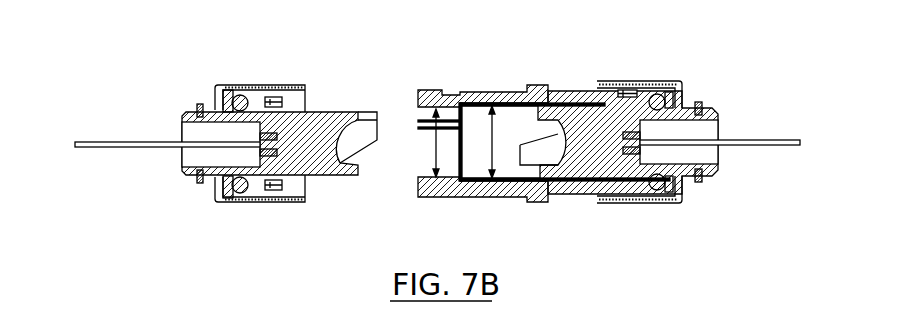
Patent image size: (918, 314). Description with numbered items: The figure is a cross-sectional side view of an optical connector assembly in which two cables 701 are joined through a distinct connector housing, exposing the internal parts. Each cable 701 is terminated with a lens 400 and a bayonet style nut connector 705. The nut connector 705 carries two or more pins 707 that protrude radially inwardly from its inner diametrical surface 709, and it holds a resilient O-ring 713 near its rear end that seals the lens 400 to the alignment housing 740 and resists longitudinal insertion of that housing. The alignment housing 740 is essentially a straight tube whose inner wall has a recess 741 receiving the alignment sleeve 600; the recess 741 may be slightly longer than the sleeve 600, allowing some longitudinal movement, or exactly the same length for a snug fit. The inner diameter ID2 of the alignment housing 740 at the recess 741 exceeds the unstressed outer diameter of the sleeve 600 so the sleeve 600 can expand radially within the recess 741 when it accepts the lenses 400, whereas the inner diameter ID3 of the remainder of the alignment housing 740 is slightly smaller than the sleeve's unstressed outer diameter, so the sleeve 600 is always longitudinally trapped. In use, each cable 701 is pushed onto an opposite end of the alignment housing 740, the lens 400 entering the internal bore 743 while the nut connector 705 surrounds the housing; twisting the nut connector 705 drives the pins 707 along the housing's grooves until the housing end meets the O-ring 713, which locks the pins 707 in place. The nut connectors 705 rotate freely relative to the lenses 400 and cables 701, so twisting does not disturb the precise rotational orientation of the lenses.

The lens 400 is at (312, 158).
The alignment sleeve 600 is at (470, 168).
The cable 701 is at (122, 141).
The nut connector 705 is at (253, 84).
The pin 707 is at (272, 97).
The inner diametrical surface 709 is at (258, 191).
The O-ring 713 is at (237, 96).
The alignment housing 740 is at (537, 86).
The recess 741 is at (480, 103).
The internal bore 743 is at (428, 152).
The inner diameter of the alignment housing at the recess ID2 is at (493, 155).
The inner diameter of the remainder of the alignment housing ID3 is at (432, 139).